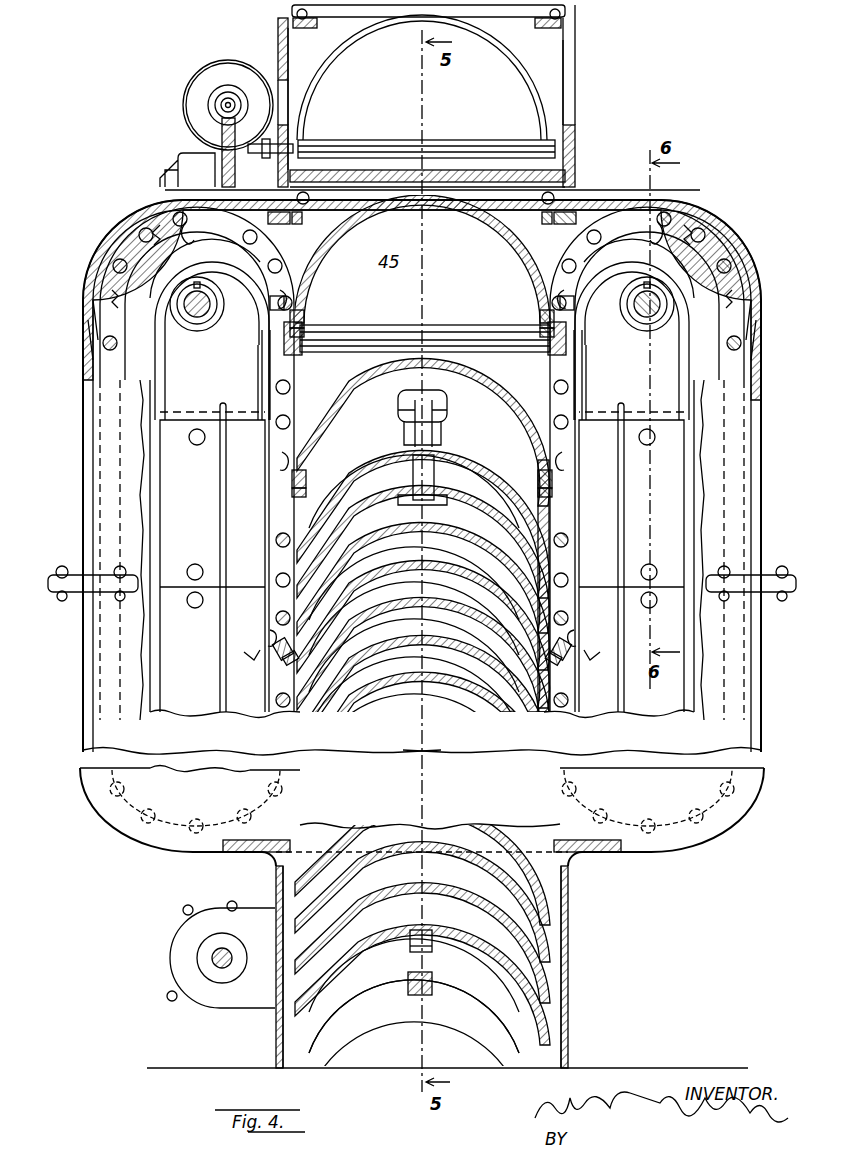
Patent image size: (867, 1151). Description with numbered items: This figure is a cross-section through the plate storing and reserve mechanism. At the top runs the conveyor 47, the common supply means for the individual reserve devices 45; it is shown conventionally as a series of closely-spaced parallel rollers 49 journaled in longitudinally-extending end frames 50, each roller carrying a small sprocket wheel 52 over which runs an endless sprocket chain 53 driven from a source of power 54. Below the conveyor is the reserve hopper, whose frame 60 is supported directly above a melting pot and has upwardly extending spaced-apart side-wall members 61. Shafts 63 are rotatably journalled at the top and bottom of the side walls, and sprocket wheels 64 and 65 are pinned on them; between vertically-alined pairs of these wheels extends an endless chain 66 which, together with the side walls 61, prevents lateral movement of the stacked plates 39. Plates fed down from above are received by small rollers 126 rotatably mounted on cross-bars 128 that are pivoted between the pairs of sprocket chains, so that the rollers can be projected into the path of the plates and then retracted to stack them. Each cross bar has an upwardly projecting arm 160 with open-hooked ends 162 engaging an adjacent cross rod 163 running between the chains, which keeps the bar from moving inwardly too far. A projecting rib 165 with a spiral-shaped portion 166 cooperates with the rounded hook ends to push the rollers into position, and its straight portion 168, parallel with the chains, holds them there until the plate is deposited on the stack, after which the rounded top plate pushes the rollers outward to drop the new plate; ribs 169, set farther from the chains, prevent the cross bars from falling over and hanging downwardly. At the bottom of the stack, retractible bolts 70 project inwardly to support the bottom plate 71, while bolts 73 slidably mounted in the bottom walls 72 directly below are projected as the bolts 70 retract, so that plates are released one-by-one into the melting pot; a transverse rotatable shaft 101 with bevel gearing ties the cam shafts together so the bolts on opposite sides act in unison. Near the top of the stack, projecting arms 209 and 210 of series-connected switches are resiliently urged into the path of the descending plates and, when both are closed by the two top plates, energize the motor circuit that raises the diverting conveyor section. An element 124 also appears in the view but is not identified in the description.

The plates 39 is at (322, 78).
The reserve device 45 is at (570, 896).
The conveyor 47 is at (578, 64).
The rollers 49 is at (372, 148).
The end frames 50 is at (290, 125).
The sprocket wheel 52 is at (242, 153).
The endless sprocket chain 53 is at (250, 118).
The source of power 54 is at (193, 102).
The frame 60 is at (763, 676).
The side-wall members 61 is at (764, 510).
The shafts 63 is at (200, 318).
The sprocket wheel 64 is at (100, 298).
The sprocket wheel 65 is at (712, 298).
The endless chain 66 is at (160, 228).
The retractible bolts 70 is at (432, 945).
The bottom plate 71 is at (350, 945).
The bottom walls 72 is at (447, 967).
The bolts 73 is at (432, 983).
The rotatable shaft 101 is at (200, 962).
The cross shaft 124 is at (458, 342).
The rollers 126 is at (98, 315).
The cross-bars 128 is at (240, 212).
The upwardly projecting arm 160 is at (270, 306).
The open-hooked ends 162 is at (185, 232).
The cross rod 163 is at (104, 344).
The projecting rib 165 is at (265, 330).
The spiral-shaped portion 166 is at (205, 250).
The straight portion 168 is at (262, 378).
The ribs 169 is at (220, 515).
The projecting arm 209 is at (435, 428).
The projecting arm 210 is at (434, 472).